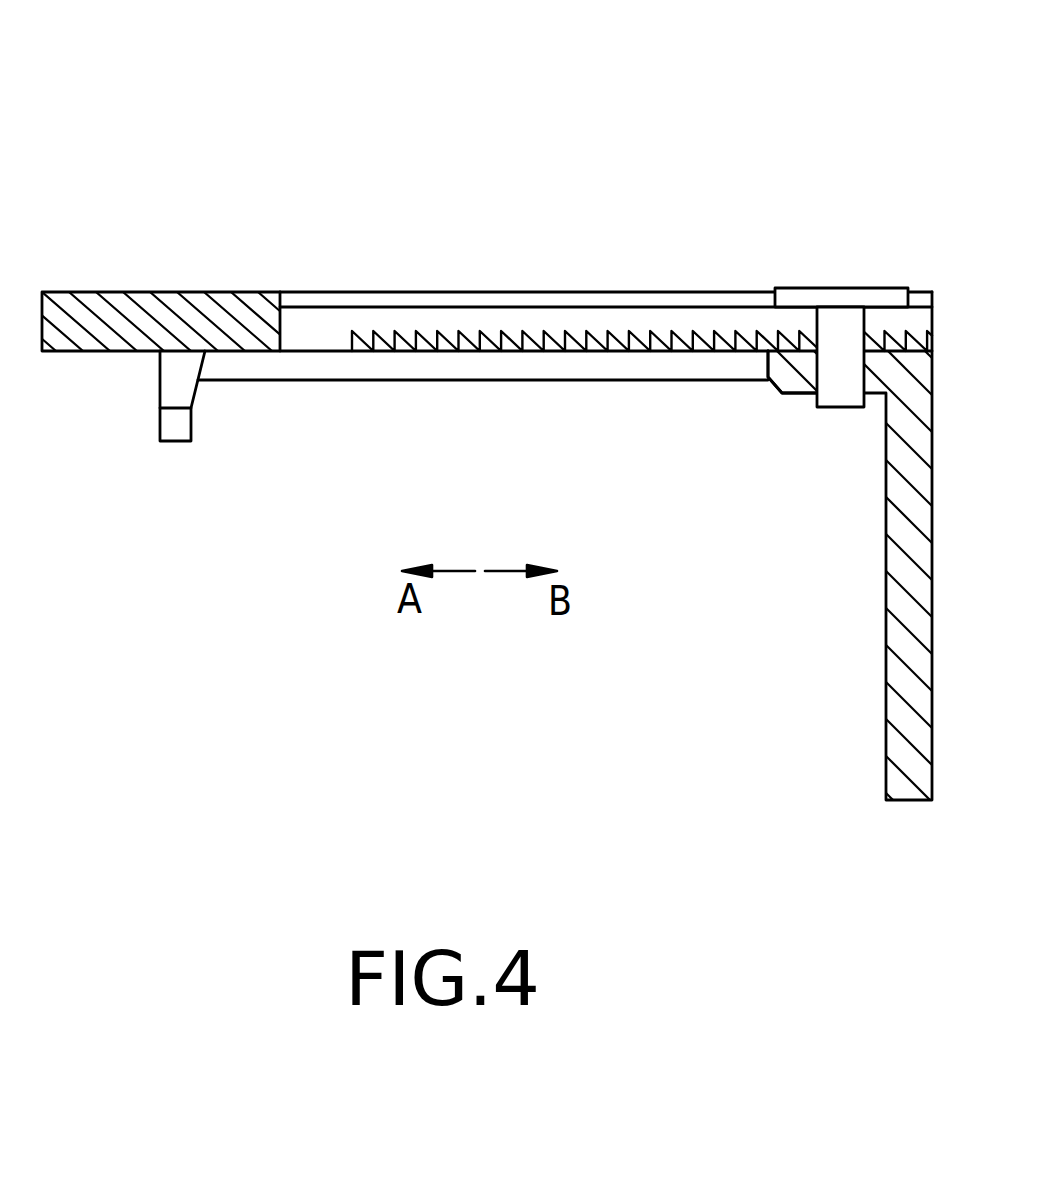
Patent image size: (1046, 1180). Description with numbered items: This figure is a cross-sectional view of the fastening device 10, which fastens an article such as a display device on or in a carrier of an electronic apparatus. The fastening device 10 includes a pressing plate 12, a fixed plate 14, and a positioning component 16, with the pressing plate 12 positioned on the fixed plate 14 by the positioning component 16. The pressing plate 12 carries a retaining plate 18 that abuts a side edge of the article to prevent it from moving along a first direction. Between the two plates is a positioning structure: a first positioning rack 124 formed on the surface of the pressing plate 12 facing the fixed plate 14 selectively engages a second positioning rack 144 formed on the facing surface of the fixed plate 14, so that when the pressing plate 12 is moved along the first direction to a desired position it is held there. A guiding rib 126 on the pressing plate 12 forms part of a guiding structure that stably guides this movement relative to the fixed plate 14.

The fastening device 10 is at (440, 71).
The pressing plate 12 is at (160, 320).
The first positioning rack 124 is at (699, 340).
The guiding rib 126 is at (543, 368).
The fixed plate 14 is at (910, 641).
The second positioning rack 144 is at (770, 351).
The positioning component 16 is at (838, 305).
The retaining plate 18 is at (172, 392).